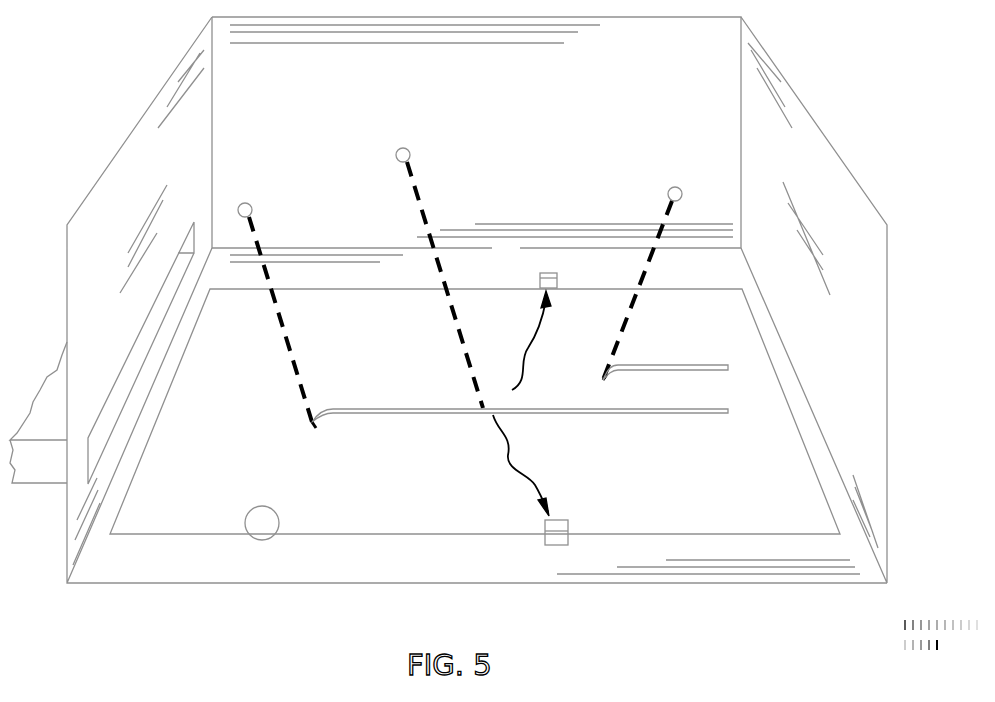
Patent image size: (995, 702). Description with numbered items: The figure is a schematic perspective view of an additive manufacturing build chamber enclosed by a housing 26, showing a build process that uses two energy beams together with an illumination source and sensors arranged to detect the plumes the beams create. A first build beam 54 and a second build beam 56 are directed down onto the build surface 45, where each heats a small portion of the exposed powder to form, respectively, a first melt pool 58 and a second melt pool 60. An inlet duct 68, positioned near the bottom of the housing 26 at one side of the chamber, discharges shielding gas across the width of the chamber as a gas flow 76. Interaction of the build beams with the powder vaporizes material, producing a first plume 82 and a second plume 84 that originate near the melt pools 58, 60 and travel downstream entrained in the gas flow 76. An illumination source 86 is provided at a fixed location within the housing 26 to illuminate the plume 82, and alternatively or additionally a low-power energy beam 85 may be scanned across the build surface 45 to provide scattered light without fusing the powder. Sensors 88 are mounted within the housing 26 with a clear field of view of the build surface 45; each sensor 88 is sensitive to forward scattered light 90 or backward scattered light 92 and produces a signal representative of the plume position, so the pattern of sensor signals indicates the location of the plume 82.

The housing 26 is at (819, 155).
The build surface 45 is at (812, 524).
The first build beam 54 is at (256, 236).
The second build beam 56 is at (668, 208).
The first melt pool 58 is at (313, 423).
The second melt pool 60 is at (604, 380).
The inlet duct 68 is at (53, 478).
The gas flow 76 is at (100, 427).
The first plume 82 is at (333, 409).
The second plume 84 is at (647, 365).
The low-power energy beam 85 is at (416, 191).
The illumination source 86 is at (258, 540).
The sensor 88 is at (544, 275).
The forward scattered light 90 is at (542, 333).
The backward scattered light 92 is at (536, 484).